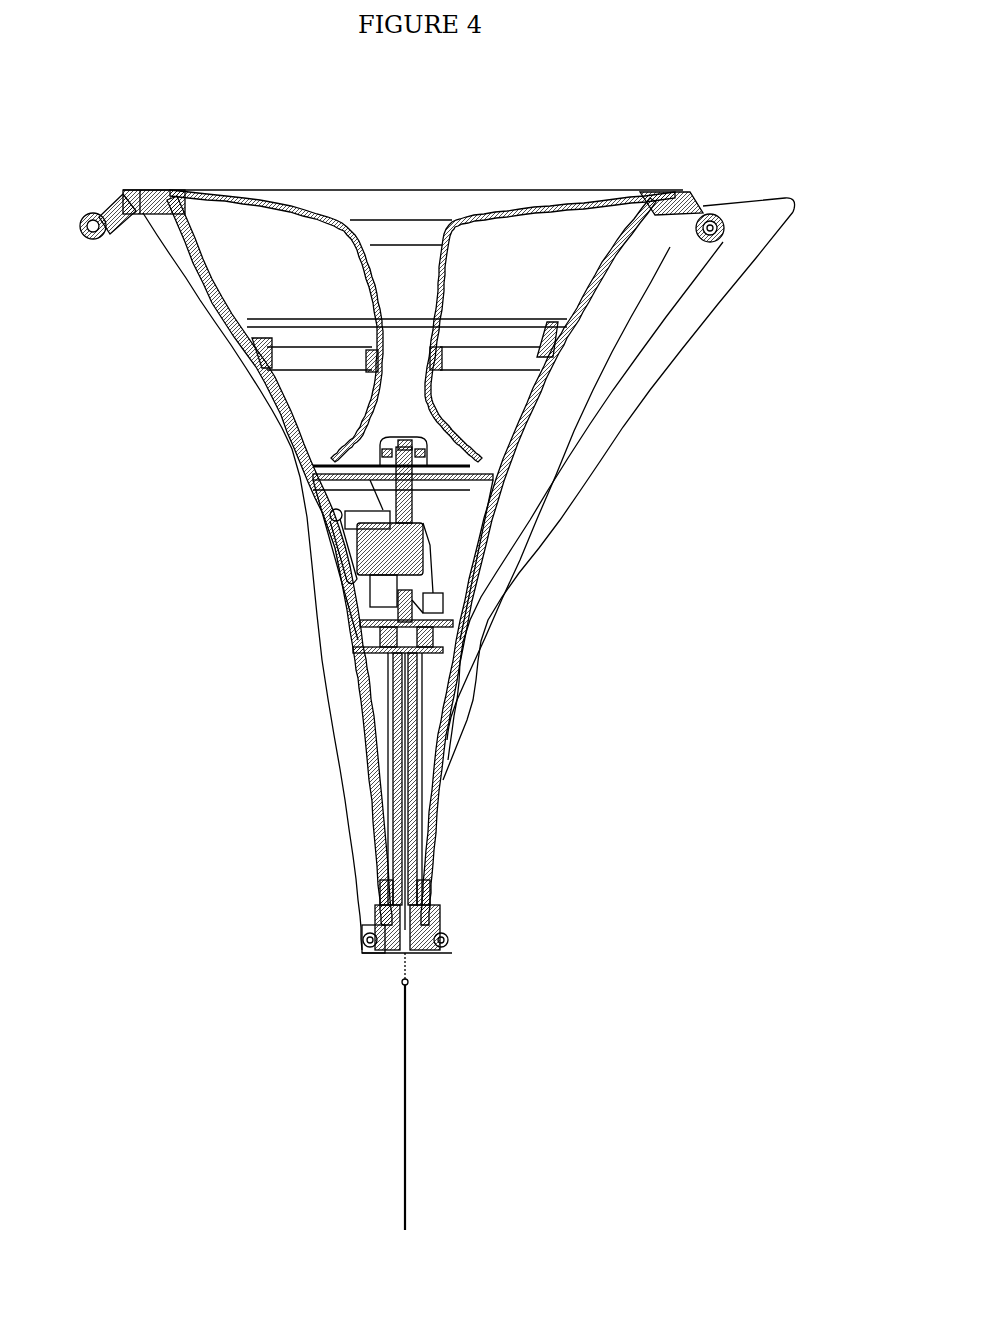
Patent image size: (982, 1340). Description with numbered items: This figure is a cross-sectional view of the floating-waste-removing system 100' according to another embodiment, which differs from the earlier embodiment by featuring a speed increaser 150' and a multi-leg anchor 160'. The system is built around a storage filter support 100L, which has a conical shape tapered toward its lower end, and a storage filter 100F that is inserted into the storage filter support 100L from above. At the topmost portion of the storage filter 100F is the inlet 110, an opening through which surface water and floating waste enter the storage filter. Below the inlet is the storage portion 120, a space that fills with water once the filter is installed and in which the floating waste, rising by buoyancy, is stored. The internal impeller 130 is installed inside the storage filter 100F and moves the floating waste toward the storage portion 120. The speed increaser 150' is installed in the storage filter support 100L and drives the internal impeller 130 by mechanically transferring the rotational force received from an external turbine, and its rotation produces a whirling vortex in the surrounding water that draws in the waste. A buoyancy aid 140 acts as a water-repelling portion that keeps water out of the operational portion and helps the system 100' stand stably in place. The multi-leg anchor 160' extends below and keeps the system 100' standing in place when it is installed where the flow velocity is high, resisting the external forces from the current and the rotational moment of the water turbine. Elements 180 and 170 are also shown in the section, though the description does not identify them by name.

The floating-waste-removing system 100' is at (404, 512).
The inlet 110 is at (407, 233).
The storage filter 100F is at (527, 253).
The storage filter support 100L is at (243, 350).
The mounting bracket 180 is at (187, 247).
The storage portion 120 is at (313, 323).
The internal impeller 130 is at (387, 450).
The speed increaser 150' is at (275, 560).
The buoyancy aid 140 is at (447, 505).
The rotating shaft 170 is at (413, 731).
The multi-leg anchor 160' is at (488, 1091).